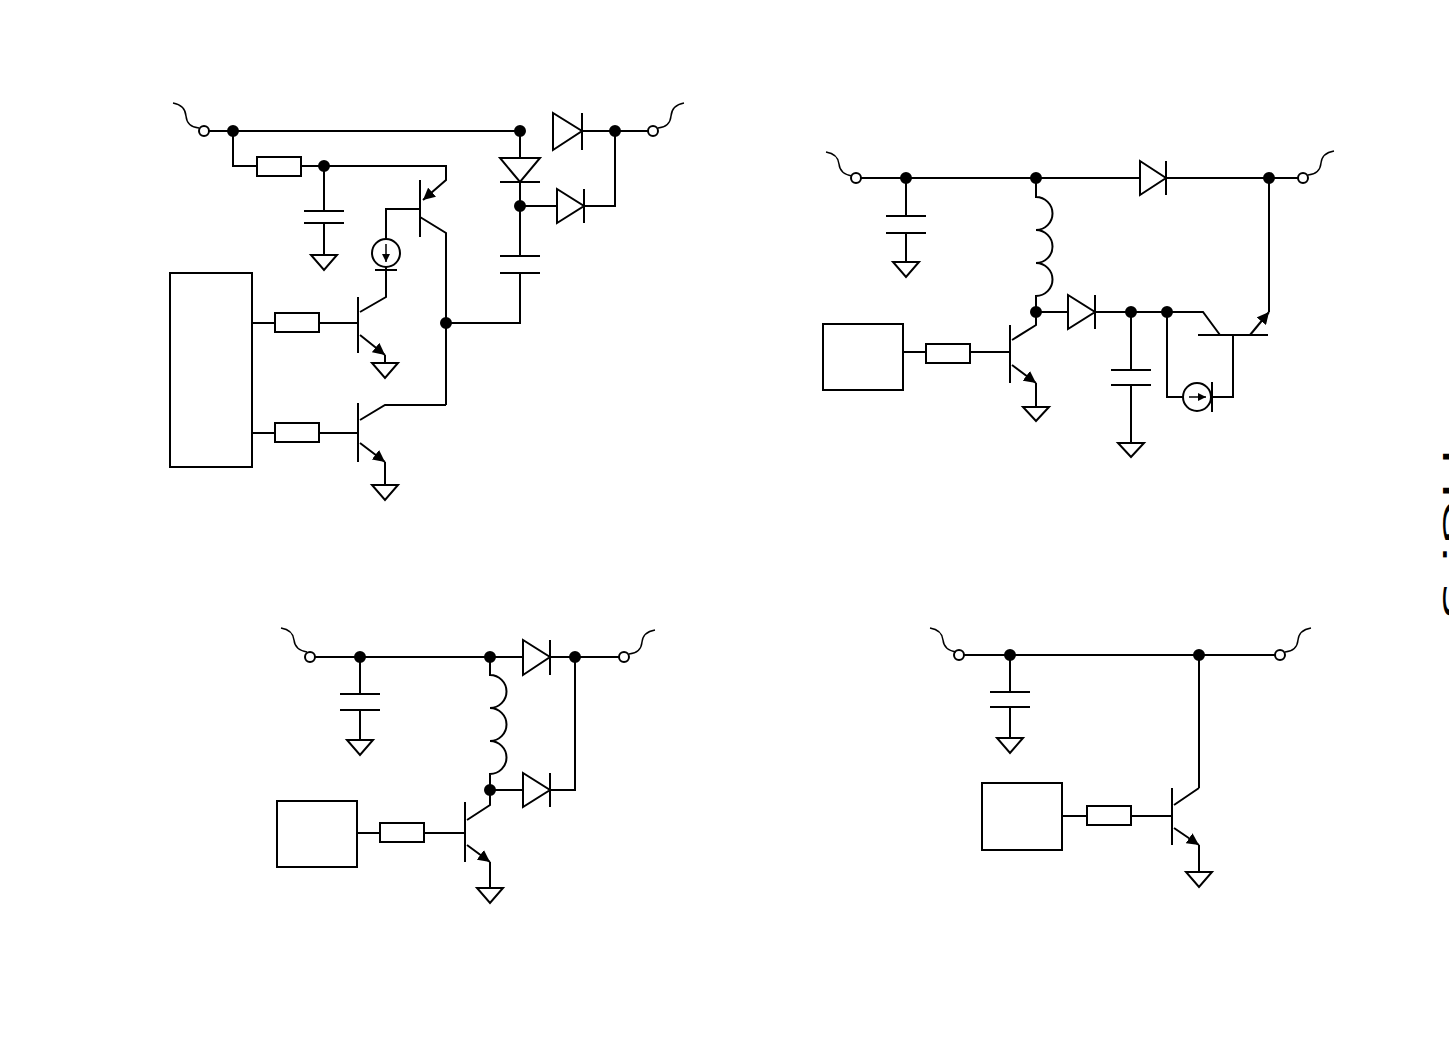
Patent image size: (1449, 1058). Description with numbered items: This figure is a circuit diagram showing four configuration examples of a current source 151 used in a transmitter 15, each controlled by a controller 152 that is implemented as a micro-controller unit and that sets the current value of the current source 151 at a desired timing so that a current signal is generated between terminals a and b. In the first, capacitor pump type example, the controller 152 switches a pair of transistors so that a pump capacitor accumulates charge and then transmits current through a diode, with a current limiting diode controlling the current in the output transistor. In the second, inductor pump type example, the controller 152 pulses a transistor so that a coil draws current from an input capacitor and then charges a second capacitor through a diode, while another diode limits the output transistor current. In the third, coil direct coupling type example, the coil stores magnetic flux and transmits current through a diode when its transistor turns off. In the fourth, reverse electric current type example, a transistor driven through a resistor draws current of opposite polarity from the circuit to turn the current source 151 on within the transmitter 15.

The current source 151 is at (404, 124).
The transmitter 15 is at (735, 503).
The controller 152 is at (170, 333).